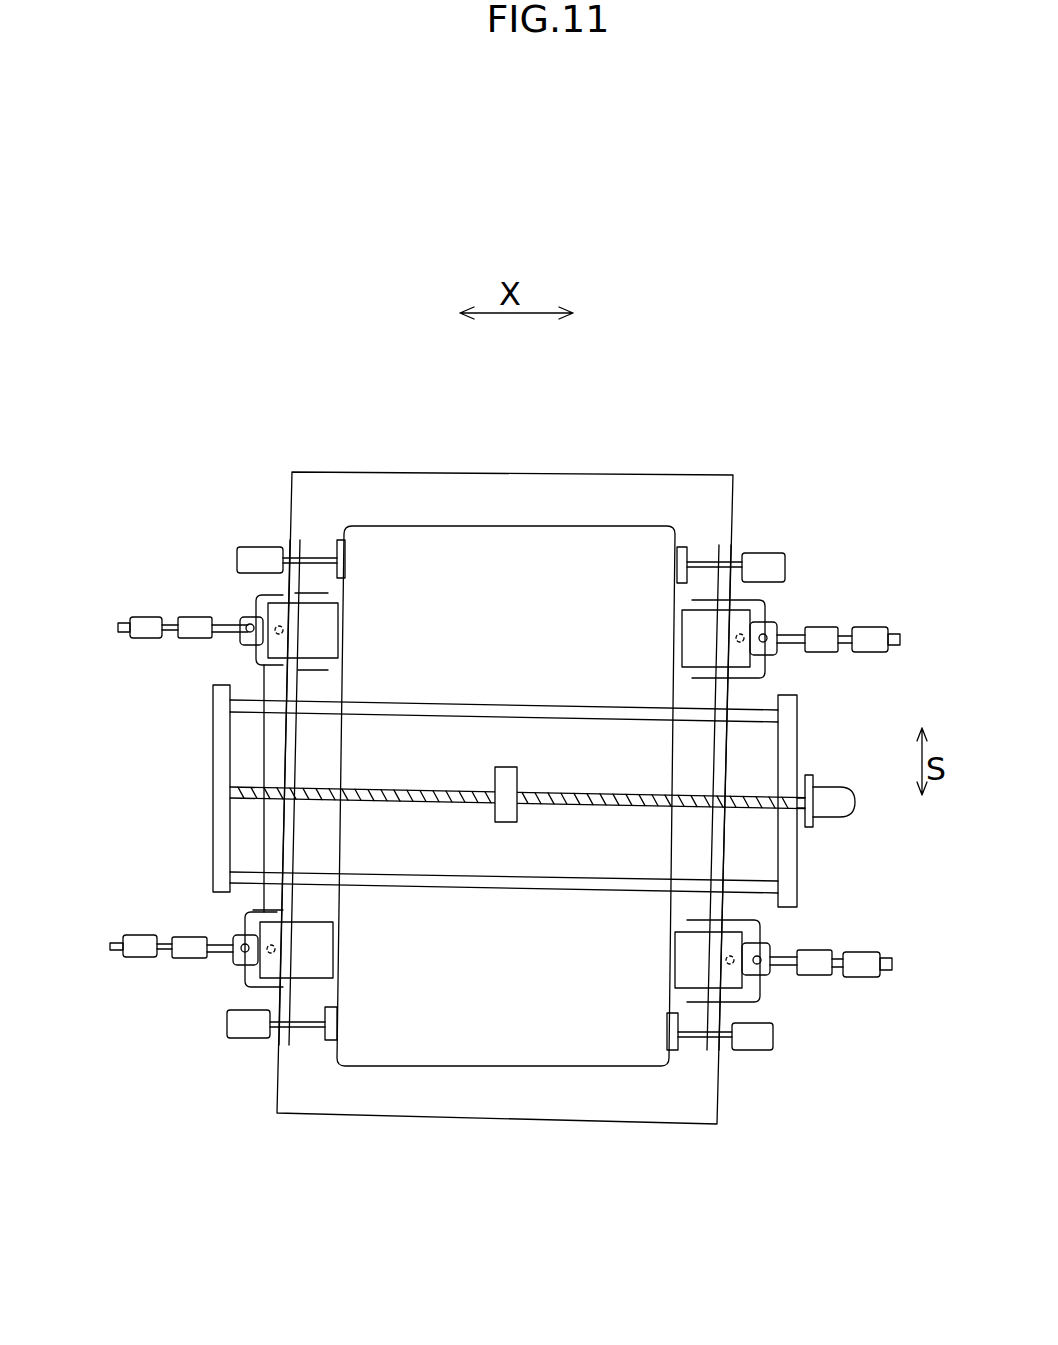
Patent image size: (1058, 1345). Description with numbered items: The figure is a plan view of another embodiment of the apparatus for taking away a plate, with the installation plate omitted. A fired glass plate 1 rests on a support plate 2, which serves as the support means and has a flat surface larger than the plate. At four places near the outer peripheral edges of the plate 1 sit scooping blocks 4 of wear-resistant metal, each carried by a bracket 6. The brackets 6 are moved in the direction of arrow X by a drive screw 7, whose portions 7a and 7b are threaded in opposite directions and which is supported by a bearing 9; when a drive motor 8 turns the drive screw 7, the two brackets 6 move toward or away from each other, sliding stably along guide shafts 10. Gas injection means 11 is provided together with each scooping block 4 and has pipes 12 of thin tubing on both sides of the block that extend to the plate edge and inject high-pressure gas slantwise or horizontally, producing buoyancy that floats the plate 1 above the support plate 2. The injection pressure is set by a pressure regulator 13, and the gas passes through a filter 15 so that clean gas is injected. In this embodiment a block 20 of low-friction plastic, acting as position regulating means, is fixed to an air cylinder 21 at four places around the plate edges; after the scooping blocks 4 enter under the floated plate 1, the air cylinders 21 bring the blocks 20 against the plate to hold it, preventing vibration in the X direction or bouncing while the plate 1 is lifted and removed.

The glass plate 1 is at (515, 565).
The support plate 2 is at (573, 500).
The scooping block 4 is at (308, 622).
The bracket 6 is at (293, 900).
The drive screw 7 is at (517, 528).
The drive screw 7a is at (573, 790).
The drive screw 7b is at (440, 787).
The drive motor 8 is at (848, 805).
The bearing 9 is at (218, 785).
The guide shaft 10 is at (460, 705).
The gas injection means 11 is at (245, 638).
The pipe 12 is at (253, 603).
The pressure regulator 13 is at (198, 627).
The filter 15 is at (148, 627).
The block 20 is at (338, 558).
The air cylinder 21 is at (258, 560).